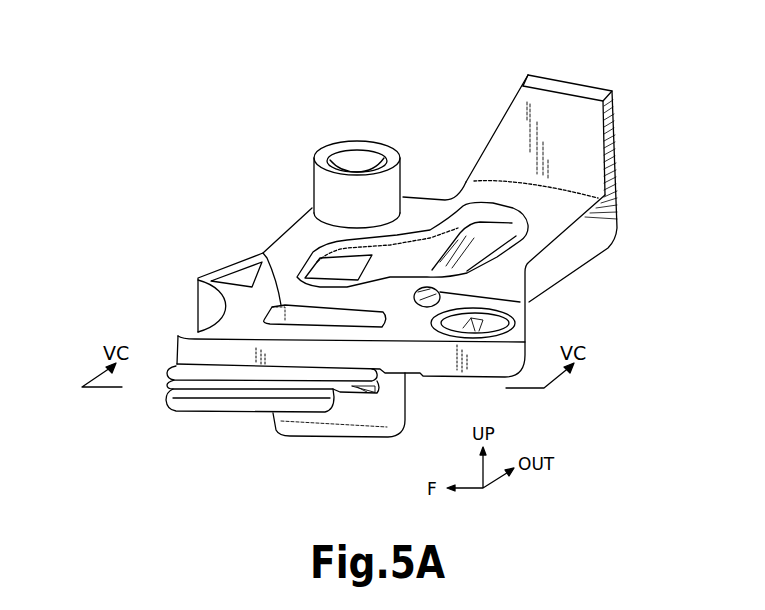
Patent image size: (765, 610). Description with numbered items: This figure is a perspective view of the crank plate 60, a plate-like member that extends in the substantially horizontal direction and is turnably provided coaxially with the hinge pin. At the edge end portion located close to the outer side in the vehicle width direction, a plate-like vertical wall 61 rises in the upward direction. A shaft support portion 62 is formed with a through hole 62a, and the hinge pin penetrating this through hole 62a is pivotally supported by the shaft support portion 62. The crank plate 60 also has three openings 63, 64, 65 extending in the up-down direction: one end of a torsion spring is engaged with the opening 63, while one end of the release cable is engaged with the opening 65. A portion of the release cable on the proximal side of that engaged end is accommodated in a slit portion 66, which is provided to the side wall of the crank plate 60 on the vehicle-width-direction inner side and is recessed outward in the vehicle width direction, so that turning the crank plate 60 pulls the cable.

The crank plate 60 is at (247, 95).
The vertical wall 61 is at (615, 130).
The shaft support portion 62 is at (311, 191).
The through hole 62a is at (373, 156).
The opening 63 is at (520, 302).
The opening 64 is at (267, 258).
The opening 65 is at (512, 327).
The slit portion 66 is at (169, 387).